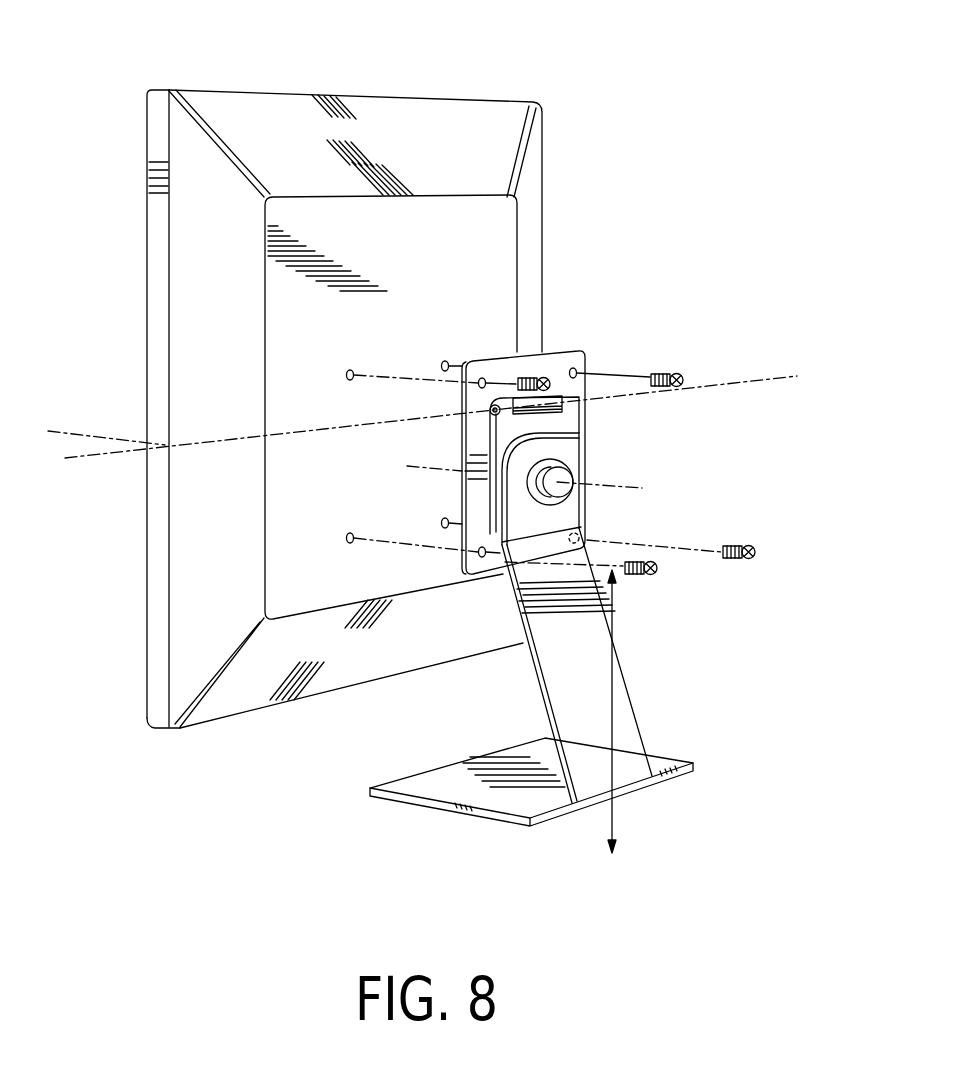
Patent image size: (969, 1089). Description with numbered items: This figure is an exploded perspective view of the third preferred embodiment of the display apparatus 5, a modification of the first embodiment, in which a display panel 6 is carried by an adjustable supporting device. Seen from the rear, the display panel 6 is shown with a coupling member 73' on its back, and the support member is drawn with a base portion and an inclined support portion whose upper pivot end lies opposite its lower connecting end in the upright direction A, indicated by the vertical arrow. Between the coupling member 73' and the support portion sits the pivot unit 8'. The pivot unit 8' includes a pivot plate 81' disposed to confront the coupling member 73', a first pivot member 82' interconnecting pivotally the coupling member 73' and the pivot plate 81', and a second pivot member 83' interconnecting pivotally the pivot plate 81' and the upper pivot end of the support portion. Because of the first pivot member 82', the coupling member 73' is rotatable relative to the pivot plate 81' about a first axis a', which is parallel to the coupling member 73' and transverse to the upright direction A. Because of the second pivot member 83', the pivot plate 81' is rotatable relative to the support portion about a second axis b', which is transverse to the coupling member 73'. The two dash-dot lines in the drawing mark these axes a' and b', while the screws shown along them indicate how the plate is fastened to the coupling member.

The display apparatus 5 is at (607, 143).
The display panel 6 is at (406, 93).
The pivot unit 8' is at (611, 417).
The pivot plate 81' is at (601, 437).
The first pivot member 82' is at (545, 337).
The second pivot member 83' is at (621, 489).
The coupling member 73' is at (616, 339).
The first axis a' is at (447, 406).
The second axis b' is at (359, 467).
The upright direction A is at (624, 713).